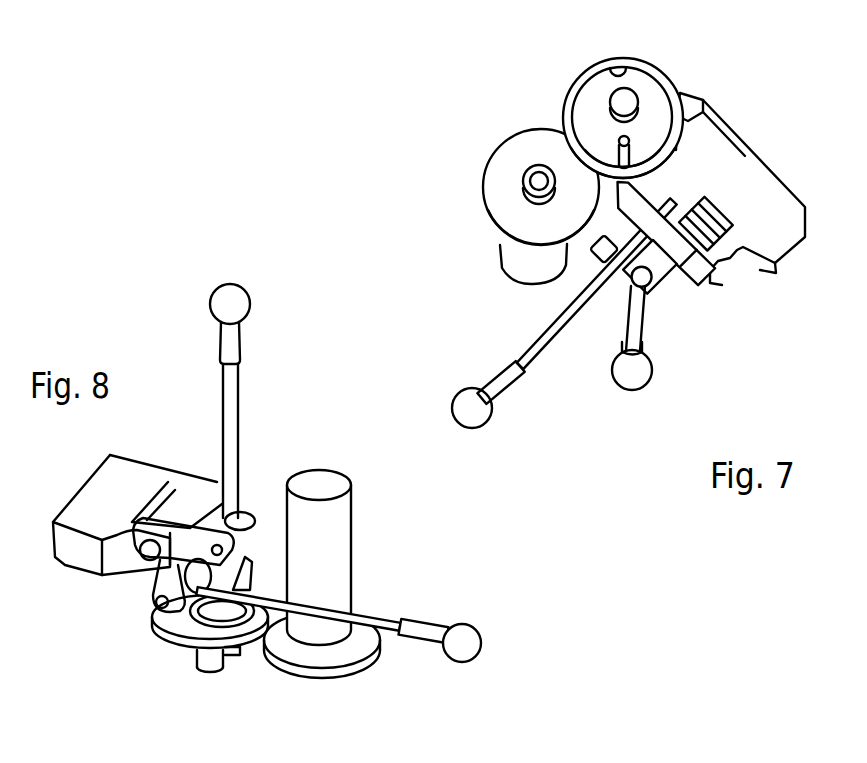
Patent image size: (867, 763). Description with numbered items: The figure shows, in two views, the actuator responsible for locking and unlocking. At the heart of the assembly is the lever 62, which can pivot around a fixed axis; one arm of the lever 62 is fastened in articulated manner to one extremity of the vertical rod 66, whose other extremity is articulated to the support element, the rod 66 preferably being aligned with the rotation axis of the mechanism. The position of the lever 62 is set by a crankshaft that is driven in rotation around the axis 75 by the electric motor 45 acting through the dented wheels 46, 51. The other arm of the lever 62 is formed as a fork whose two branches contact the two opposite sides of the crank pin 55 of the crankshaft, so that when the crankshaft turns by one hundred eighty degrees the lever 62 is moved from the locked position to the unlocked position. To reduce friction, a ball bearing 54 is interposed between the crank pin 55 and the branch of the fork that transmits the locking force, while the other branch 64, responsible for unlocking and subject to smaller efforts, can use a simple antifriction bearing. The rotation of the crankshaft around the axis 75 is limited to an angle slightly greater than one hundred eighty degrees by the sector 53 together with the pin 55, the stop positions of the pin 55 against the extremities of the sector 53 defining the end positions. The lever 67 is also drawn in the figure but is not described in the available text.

In FIG. 7, the electric motor 45 is at (513, 259).
In FIG. 8, the electric motor 45 is at (330, 557).
In FIG. 7, the dented wheel 46 is at (517, 162).
In FIG. 8, the dented wheel 46 is at (367, 663).
In FIG. 7, the dented wheel 51 is at (655, 86).
In FIG. 8, the dented wheel 51 is at (163, 633).
In FIG. 7, the sector 53 is at (620, 80).
In FIG. 8, the sector 53 is at (240, 650).
In FIG. 6, the ball bearing 54 is at (275, 17).
In FIG. 8, the ball bearing 54 is at (212, 612).
In FIG. 7, the crank pin 55 is at (652, 122).
In FIG. 7, the lever 62 is at (690, 287).
In FIG. 8, the lever 62 is at (157, 583).
In FIG. 6, the fork branch 64 is at (195, 13).
In FIG. 7, the vertical rod 66 is at (642, 337).
In FIG. 8, the vertical rod 66 is at (235, 407).
In FIG. 7, the lever 67 is at (528, 357).
In FIG. 8, the lever 67 is at (380, 623).
In FIG. 6, the axis 75 is at (380, 2).